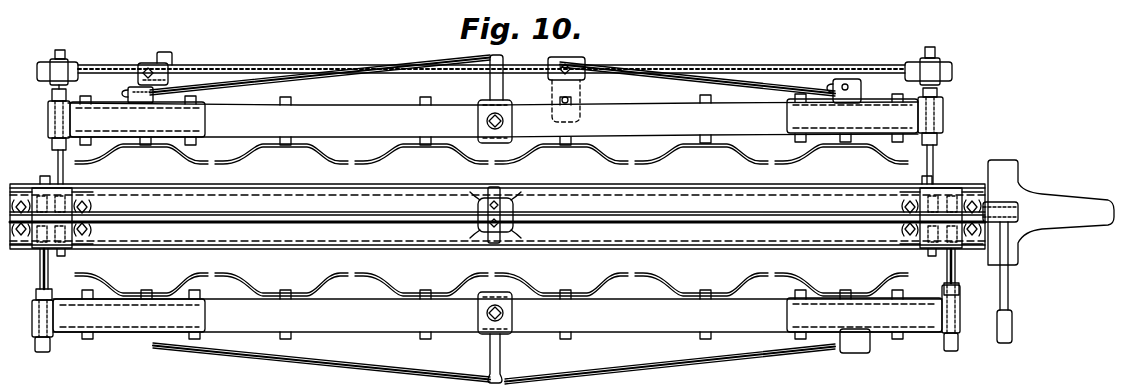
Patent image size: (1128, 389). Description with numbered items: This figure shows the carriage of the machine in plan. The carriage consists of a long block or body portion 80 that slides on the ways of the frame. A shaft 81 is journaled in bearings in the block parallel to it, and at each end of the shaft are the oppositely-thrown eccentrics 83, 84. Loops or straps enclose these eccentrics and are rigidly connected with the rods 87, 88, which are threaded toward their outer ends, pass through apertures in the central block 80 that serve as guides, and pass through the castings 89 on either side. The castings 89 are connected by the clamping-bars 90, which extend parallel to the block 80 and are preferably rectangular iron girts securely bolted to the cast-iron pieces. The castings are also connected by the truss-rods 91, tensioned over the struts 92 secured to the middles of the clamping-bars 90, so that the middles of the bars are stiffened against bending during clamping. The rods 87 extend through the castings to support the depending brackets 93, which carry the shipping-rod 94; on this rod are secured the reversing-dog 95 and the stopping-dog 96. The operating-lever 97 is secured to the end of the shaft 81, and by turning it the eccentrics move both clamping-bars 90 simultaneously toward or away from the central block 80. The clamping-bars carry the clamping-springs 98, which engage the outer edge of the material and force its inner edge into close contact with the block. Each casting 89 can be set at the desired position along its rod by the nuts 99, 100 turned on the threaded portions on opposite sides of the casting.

The block or body portion 80 is at (497, 216).
The shaft 81 is at (420, 220).
The eccentric 83 is at (497, 218).
The eccentric 84 is at (496, 218).
The rod 87 is at (58, 165).
The rod 88 is at (40, 267).
The casting 89 is at (497, 215).
The clamping-bar 90 is at (497, 216).
The truss-rod 91 is at (460, 61).
The strut 92 is at (490, 86).
The depending bracket 93 is at (72, 63).
The shipping-rod 94 is at (696, 72).
The reversing-dog 95 is at (582, 92).
The stopping-dog 96 is at (170, 58).
The operating-lever 97 is at (1011, 296).
The clamping-spring 98 is at (376, 159).
The nut 99 is at (52, 96).
The nut 100 is at (52, 143).